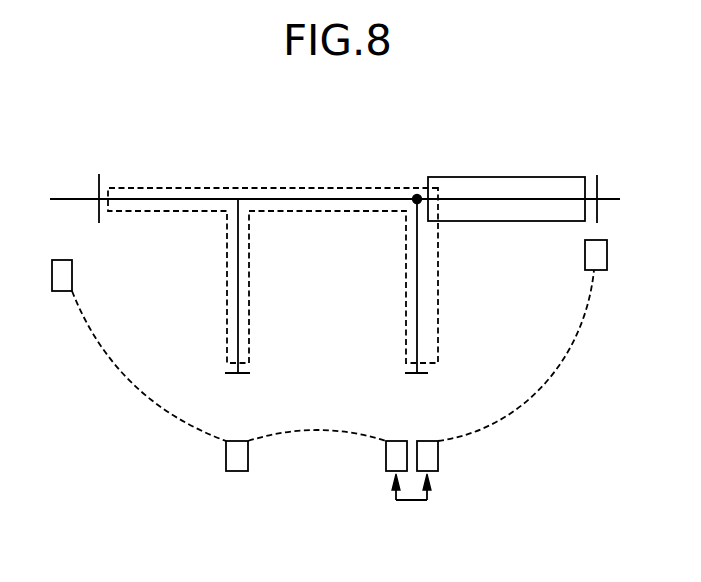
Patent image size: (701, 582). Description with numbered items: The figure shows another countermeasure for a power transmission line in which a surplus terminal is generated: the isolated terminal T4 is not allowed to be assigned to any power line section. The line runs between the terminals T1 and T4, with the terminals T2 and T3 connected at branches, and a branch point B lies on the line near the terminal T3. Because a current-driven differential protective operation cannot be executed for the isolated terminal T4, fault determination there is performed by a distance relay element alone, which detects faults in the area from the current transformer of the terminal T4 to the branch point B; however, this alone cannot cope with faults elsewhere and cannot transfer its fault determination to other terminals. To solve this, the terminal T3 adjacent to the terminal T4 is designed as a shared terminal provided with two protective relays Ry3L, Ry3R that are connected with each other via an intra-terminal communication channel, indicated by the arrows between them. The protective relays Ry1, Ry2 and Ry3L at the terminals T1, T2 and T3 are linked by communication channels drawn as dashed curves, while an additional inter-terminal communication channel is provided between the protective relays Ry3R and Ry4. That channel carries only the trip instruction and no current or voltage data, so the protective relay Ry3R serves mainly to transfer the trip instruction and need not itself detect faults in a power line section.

The terminal T1 is at (98, 183).
The terminal T2 is at (237, 304).
The terminal T3 is at (419, 304).
The isolated terminal T4 is at (596, 183).
The branch point B is at (417, 199).
The protective relay Ry1 is at (58, 291).
The protective relay Ry2 is at (233, 471).
The protective relay Ry3L is at (389, 471).
The protective relay Ry3R is at (434, 471).
The protective relay Ry4 is at (602, 270).